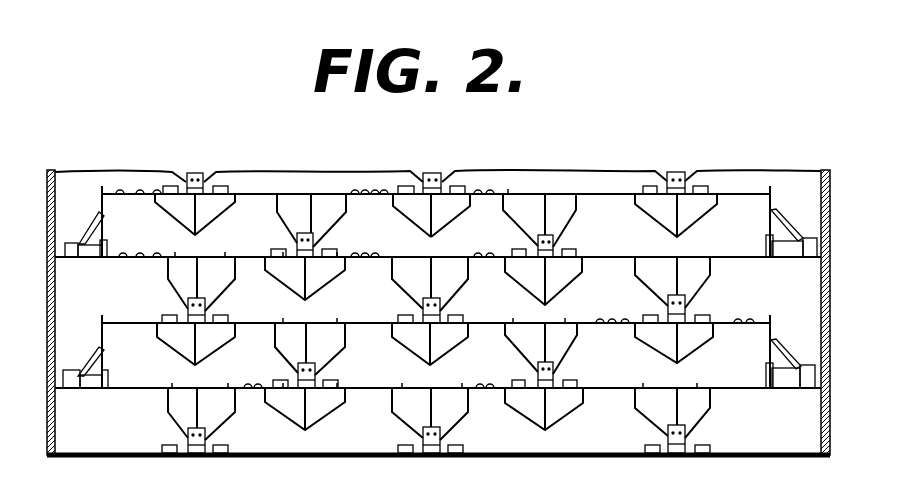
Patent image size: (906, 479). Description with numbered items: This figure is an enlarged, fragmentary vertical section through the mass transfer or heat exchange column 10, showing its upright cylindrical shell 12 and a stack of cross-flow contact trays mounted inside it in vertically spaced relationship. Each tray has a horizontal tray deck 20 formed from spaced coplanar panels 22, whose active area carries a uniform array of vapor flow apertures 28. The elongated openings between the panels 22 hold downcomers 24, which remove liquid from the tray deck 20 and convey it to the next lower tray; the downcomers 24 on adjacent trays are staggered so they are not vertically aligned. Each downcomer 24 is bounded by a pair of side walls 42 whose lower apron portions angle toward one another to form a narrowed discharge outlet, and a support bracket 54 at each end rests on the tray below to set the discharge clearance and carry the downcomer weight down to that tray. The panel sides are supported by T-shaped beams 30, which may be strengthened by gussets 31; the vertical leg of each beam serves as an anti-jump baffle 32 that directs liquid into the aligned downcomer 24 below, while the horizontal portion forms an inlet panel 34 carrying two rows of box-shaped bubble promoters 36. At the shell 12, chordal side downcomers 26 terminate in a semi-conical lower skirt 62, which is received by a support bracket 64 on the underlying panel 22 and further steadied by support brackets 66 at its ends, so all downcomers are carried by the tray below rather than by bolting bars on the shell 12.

The mass transfer or heat exchange column 10 is at (655, 153).
The cylindrical shell 12 is at (836, 150).
The tray deck 20 is at (585, 190).
The panels 22 is at (613, 192).
The downcomers 24 is at (388, 203).
The side downcomers 26 is at (77, 237).
The vapor flow apertures 28 is at (123, 193).
The T-shaped beams 30 is at (441, 194).
The gussets 31 is at (457, 211).
The anti-jump baffle 32 is at (421, 228).
The inlet panel 34 is at (418, 186).
The bubble promoters 36 is at (226, 190).
The side walls 42 is at (405, 290).
The support bracket 54 is at (556, 242).
The lower skirt 62 is at (100, 213).
The support bracket 64 is at (74, 259).
The support brackets 66 is at (108, 245).